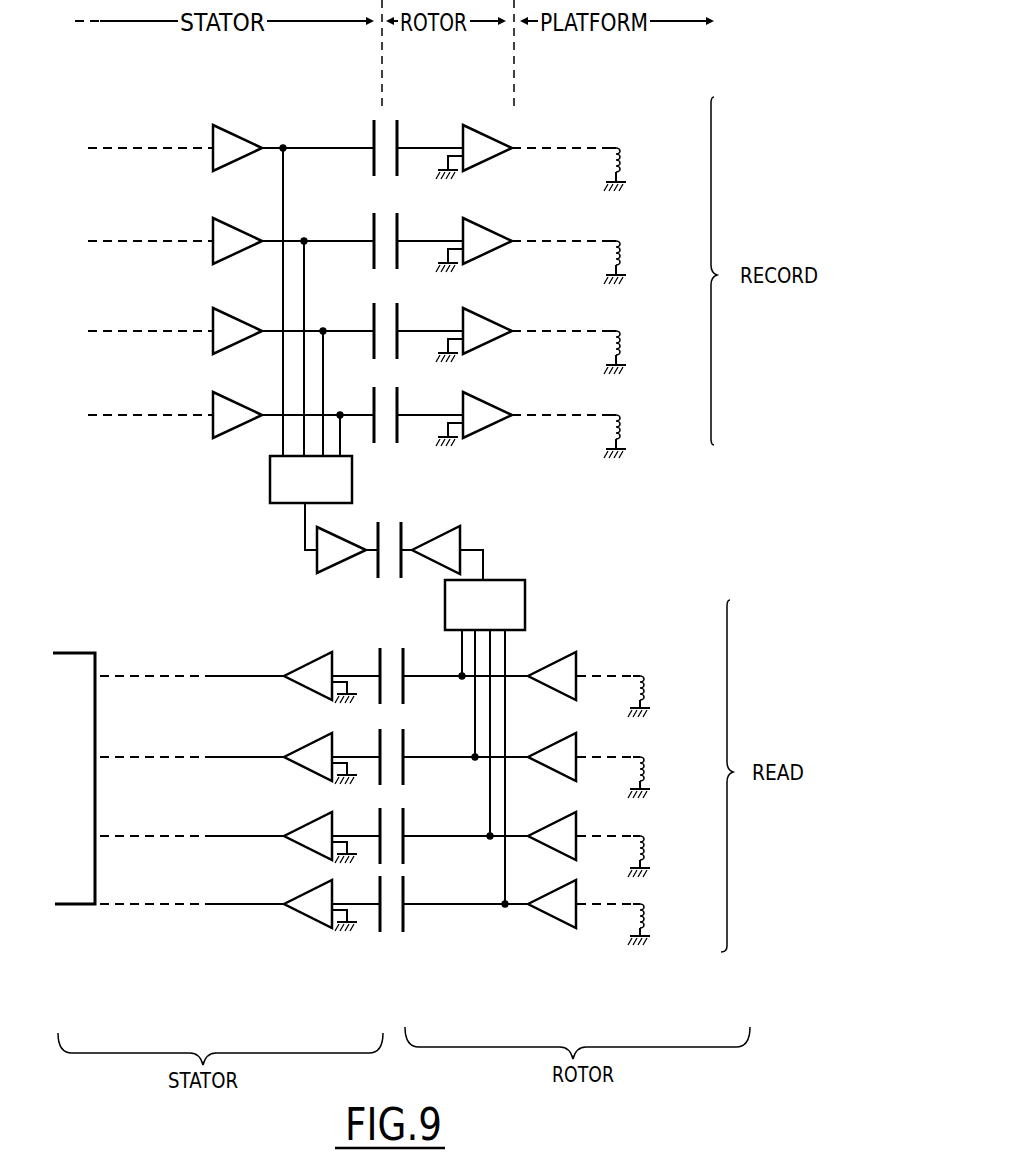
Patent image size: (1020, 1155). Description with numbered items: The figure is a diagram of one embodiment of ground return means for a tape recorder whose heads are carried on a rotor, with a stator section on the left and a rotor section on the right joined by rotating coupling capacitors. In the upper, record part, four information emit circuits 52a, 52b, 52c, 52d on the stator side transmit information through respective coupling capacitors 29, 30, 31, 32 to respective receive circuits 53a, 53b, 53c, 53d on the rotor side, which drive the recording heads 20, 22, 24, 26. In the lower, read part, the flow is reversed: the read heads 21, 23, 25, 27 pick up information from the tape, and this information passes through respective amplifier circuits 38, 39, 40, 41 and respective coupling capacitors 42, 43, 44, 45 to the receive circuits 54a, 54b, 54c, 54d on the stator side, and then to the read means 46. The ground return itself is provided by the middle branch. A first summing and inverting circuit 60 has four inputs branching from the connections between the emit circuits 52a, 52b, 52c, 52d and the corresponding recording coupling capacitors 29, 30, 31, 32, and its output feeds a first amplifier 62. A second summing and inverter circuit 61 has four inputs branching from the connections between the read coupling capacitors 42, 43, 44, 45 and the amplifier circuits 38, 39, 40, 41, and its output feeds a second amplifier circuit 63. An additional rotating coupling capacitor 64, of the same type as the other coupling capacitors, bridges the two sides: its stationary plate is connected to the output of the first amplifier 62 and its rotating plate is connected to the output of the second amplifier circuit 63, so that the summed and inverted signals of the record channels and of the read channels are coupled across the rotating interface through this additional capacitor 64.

The recording head 20 is at (618, 137).
The recording head 22 is at (618, 230).
The recording head 24 is at (618, 320).
The recording head 26 is at (618, 404).
The read head 21 is at (653, 667).
The read head 23 is at (653, 748).
The read head 25 is at (653, 827).
The read head 27 is at (653, 895).
The coupling capacitor 29 is at (373, 136).
The coupling capacitor 30 is at (373, 229).
The coupling capacitor 31 is at (373, 319).
The coupling capacitor 32 is at (373, 403).
The amplifier circuit 38 is at (576, 671).
The amplifier circuit 39 is at (576, 752).
The amplifier circuit 40 is at (576, 831).
The amplifier circuit 41 is at (576, 899).
The coupling capacitor 42 is at (402, 666).
The coupling capacitor 43 is at (402, 747).
The coupling capacitor 44 is at (402, 826).
The coupling capacitor 45 is at (402, 894).
The read means 46 is at (72, 656).
The information emit circuit 52a is at (222, 132).
The information emit circuit 52b is at (222, 227).
The information emit circuit 52c is at (222, 315).
The information emit circuit 52d is at (222, 401).
The receive circuit 53a is at (482, 140).
The receive circuit 53b is at (482, 233).
The receive circuit 53c is at (482, 323).
The receive circuit 53d is at (482, 407).
The receive circuit 54a is at (310, 666).
The receive circuit 54b is at (310, 747).
The receive circuit 54c is at (310, 826).
The receive circuit 54d is at (310, 894).
The first summing and inverting circuit 60 is at (270, 486).
The second summing and inverter circuit 61 is at (525, 612).
The first amplifier 62 is at (337, 564).
The second amplifier circuit 63 is at (458, 532).
The additional rotating coupling capacitor 64 is at (406, 538).